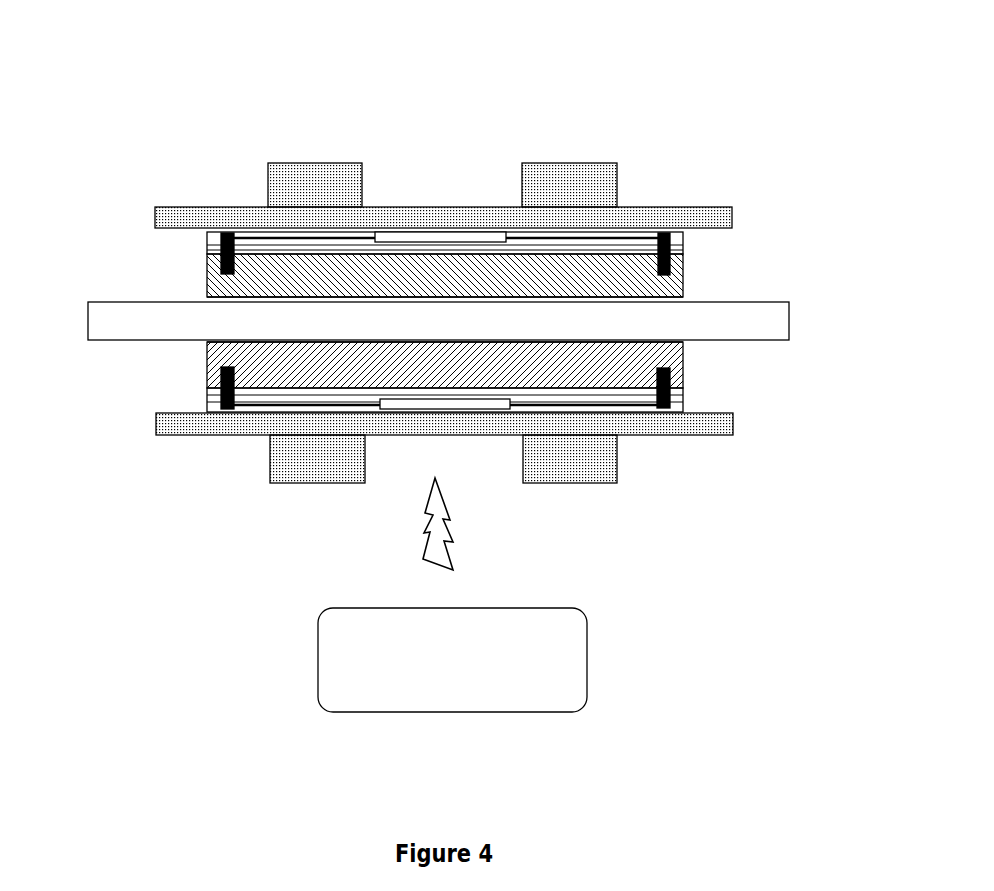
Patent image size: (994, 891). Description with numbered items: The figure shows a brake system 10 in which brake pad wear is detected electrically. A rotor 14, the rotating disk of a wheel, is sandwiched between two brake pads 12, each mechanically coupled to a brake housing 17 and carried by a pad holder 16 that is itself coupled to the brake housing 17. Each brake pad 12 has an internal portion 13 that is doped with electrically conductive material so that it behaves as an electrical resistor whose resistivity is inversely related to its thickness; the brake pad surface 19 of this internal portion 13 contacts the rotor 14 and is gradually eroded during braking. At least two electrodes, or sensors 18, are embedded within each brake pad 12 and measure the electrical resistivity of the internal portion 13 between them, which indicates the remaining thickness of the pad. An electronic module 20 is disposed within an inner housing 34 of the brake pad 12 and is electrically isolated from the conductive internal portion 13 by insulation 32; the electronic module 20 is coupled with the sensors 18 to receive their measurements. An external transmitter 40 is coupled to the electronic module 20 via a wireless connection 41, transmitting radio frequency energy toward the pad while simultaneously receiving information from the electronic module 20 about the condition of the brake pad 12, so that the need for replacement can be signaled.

The brake system 10 is at (233, 88).
The brake pad 12 is at (206, 378).
The internal portion 13 is at (232, 285).
The rotor 14 is at (438, 321).
The pad holder 16 is at (397, 206).
The brake housing 17 is at (634, 203).
The sensor 18 is at (220, 252).
The brake pad surface 19 is at (280, 293).
The electronic module 20 is at (441, 238).
The insulation 32 is at (678, 250).
The inner housing 34 is at (678, 235).
The external transmitter 40 is at (452, 660).
The wireless connection 41 is at (423, 523).